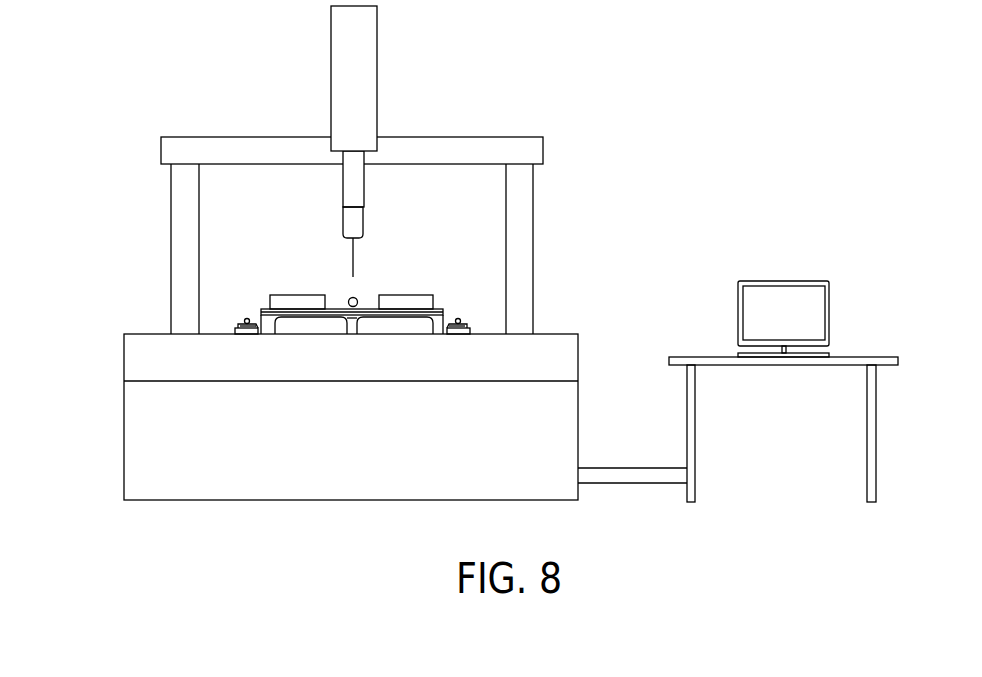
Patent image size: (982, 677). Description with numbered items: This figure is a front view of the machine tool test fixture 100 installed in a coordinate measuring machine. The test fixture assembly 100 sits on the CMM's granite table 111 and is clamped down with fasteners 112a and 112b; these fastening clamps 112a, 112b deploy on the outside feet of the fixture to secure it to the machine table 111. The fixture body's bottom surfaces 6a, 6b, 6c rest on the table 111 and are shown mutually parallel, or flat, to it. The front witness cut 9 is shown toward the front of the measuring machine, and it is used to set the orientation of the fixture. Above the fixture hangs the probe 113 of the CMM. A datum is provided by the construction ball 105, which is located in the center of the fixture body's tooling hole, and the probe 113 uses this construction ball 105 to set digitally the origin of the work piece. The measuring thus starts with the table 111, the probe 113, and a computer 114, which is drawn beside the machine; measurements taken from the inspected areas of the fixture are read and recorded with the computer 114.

The bottom surface 6a is at (263, 337).
The bottom surface 6b is at (350, 337).
The bottom surface 6c is at (437, 337).
The front witness cut 9 is at (293, 308).
The test fixture 100 is at (369, 367).
The construction ball 105 is at (352, 298).
The granite table 111 is at (197, 370).
The fastener 112a is at (237, 318).
The fastener 112b is at (457, 323).
The probe 113 is at (357, 219).
The computer 114 is at (783, 303).